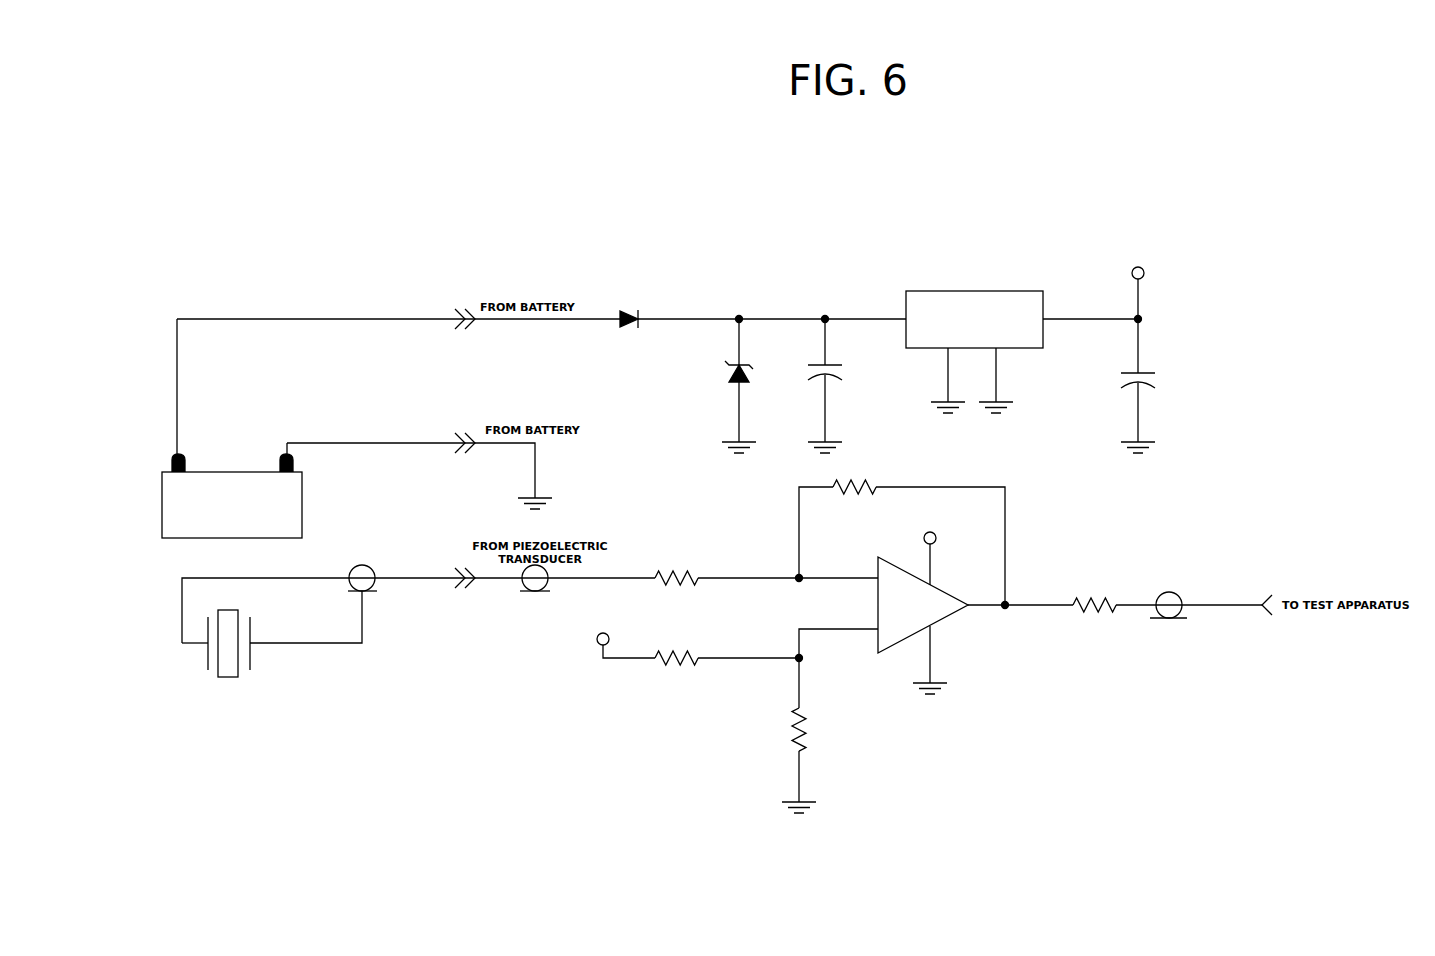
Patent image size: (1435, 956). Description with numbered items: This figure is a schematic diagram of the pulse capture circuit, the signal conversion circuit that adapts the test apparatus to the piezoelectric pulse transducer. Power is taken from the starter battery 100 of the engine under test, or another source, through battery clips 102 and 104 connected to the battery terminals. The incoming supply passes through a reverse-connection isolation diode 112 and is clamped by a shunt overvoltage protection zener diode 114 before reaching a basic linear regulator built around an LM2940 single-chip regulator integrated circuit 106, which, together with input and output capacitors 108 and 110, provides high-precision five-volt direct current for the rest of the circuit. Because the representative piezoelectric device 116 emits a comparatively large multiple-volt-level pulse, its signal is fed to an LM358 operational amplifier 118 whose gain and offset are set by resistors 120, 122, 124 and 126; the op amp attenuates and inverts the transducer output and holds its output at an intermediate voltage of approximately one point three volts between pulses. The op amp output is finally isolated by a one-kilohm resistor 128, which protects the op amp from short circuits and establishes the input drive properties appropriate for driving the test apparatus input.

The starter battery 100 is at (248, 514).
The battery clip 102 is at (181, 457).
The battery clip 104 is at (283, 457).
The LM2940 single-chip regulator integrated circuit 106 is at (905, 294).
The input capacitor 108 is at (813, 366).
The output capacitor 110 is at (1123, 374).
The reverse-connection isolation diode 112 is at (618, 314).
The shunt overvoltage protection zener diode 114 is at (734, 380).
The piezoelectric device 116 is at (252, 657).
The LM358 operational amplifier 118 is at (943, 621).
The resistor 120 is at (673, 573).
The resistor 122 is at (868, 485).
The resistor 124 is at (693, 651).
The resistor 126 is at (797, 732).
The 1.0 kilohm resistor 128 is at (1092, 600).